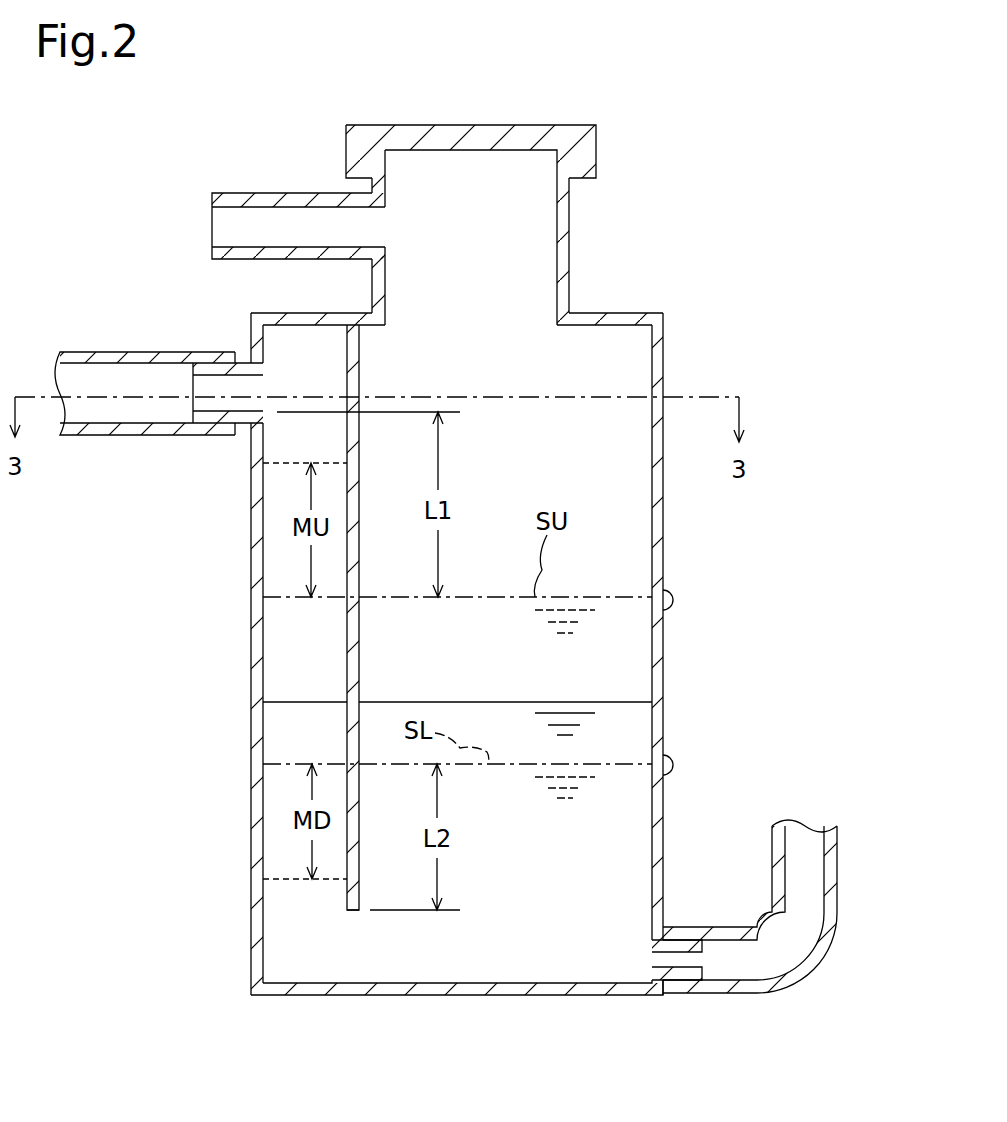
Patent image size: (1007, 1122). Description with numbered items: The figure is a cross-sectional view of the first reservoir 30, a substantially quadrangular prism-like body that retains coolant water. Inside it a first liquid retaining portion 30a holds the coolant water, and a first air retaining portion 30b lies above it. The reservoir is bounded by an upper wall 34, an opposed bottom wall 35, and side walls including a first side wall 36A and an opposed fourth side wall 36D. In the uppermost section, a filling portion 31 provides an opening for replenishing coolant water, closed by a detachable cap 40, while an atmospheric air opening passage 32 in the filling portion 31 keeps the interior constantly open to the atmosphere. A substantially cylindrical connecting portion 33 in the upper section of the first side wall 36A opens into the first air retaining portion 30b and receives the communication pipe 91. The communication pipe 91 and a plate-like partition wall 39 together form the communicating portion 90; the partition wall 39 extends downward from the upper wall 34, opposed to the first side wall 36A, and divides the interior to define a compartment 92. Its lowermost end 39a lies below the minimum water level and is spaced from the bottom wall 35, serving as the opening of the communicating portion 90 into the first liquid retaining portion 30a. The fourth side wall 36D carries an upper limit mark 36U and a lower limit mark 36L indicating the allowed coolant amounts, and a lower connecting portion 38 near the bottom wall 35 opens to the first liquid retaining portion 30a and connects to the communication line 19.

The communication line 19 is at (725, 927).
The first reservoir 30 is at (459, 655).
The first liquid retaining portion 30a is at (560, 960).
The first air retaining portion 30b is at (600, 510).
The filling portion 31 is at (569, 243).
The atmospheric air opening passage 32 is at (272, 192).
The connecting portion 33 is at (208, 423).
The upper wall 34 is at (318, 313).
The bottom wall 35 is at (320, 997).
The first side wall 36A is at (250, 925).
The fourth side wall 36D is at (663, 677).
The upper limit mark 36U is at (673, 600).
The lower limit mark 36L is at (673, 765).
The connecting portion 38 is at (684, 972).
The partition wall 39 is at (359, 640).
The lowermost end 39a is at (360, 912).
The cap 40 is at (596, 147).
The communicating portion 90 is at (201, 482).
The communication pipe 91 is at (135, 352).
The compartment 92 is at (287, 655).